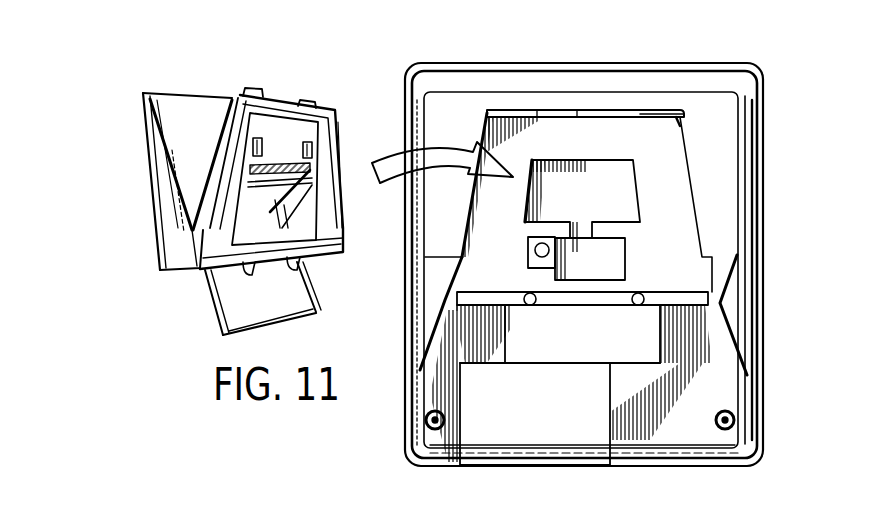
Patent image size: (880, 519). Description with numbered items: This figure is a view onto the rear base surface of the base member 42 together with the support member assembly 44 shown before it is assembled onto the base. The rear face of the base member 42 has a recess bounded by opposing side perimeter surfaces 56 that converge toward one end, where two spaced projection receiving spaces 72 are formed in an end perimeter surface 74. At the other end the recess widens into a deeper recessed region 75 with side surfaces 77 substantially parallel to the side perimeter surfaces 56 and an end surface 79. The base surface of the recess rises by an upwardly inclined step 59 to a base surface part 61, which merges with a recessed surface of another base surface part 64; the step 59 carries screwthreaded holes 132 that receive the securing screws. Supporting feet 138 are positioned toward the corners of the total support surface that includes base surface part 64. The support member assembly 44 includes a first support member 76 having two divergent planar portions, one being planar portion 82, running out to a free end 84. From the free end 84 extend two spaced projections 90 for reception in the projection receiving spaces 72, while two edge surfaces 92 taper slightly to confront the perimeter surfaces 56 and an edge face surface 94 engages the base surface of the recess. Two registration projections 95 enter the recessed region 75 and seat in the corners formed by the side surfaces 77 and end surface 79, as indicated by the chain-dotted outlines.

The base member 42 is at (770, 92).
The support member assembly 44 is at (128, 230).
The side perimeter surfaces 56 is at (483, 127).
The inclined step 59 is at (713, 258).
The base surface part 61 is at (638, 343).
The base surface part 64 is at (710, 390).
The projection receiving spaces 72 is at (627, 115).
The end perimeter surface 74 is at (653, 110).
The recessed region 75 is at (557, 218).
The first support member 76 is at (100, 120).
The side surfaces 77 is at (545, 203).
The end surface 79 is at (674, 124).
The planar portion 82 is at (143, 92).
The free end 84 is at (345, 246).
The projections 90 is at (312, 104).
The edge surfaces 92 is at (210, 170).
The edge face surface 94 is at (205, 266).
The registration projections 95 is at (300, 142).
The holes 132 is at (530, 299).
The supporting feet 138 is at (426, 424).